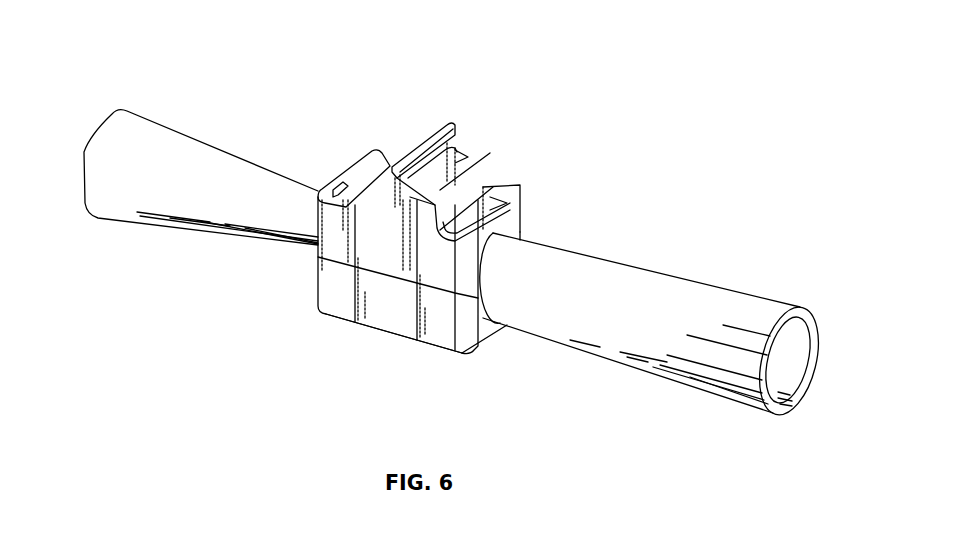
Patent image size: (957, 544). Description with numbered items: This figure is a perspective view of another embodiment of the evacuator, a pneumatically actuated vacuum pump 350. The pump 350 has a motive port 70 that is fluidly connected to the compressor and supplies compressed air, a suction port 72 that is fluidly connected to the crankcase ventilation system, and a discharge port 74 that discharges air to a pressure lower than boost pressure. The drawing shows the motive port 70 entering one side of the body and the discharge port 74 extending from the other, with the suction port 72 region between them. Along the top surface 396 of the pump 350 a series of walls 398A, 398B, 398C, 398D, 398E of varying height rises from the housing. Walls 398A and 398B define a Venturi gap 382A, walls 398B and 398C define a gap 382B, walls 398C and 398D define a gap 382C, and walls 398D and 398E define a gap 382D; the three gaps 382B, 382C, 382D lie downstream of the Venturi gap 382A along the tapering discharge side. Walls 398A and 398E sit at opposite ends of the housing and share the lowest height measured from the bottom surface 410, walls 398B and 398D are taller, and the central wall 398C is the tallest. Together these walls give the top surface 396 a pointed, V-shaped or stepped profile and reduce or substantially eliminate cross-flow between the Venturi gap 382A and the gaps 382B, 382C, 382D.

The pneumatically actuated vacuum pump 350 is at (700, 87).
The motive port 70 is at (86, 152).
The discharge port 74 is at (780, 412).
The suction port 72 is at (545, 104).
The bottom surface 410 is at (460, 354).
The Venturi gap 382A is at (340, 192).
The gap 382B is at (395, 140).
The gap 382C is at (468, 148).
The gap 382D is at (490, 192).
The wall 398A is at (357, 163).
The wall 398B is at (408, 150).
The wall 398C is at (440, 135).
The wall 398D is at (482, 152).
The wall 398E is at (510, 202).
The top surface 396 is at (493, 147).